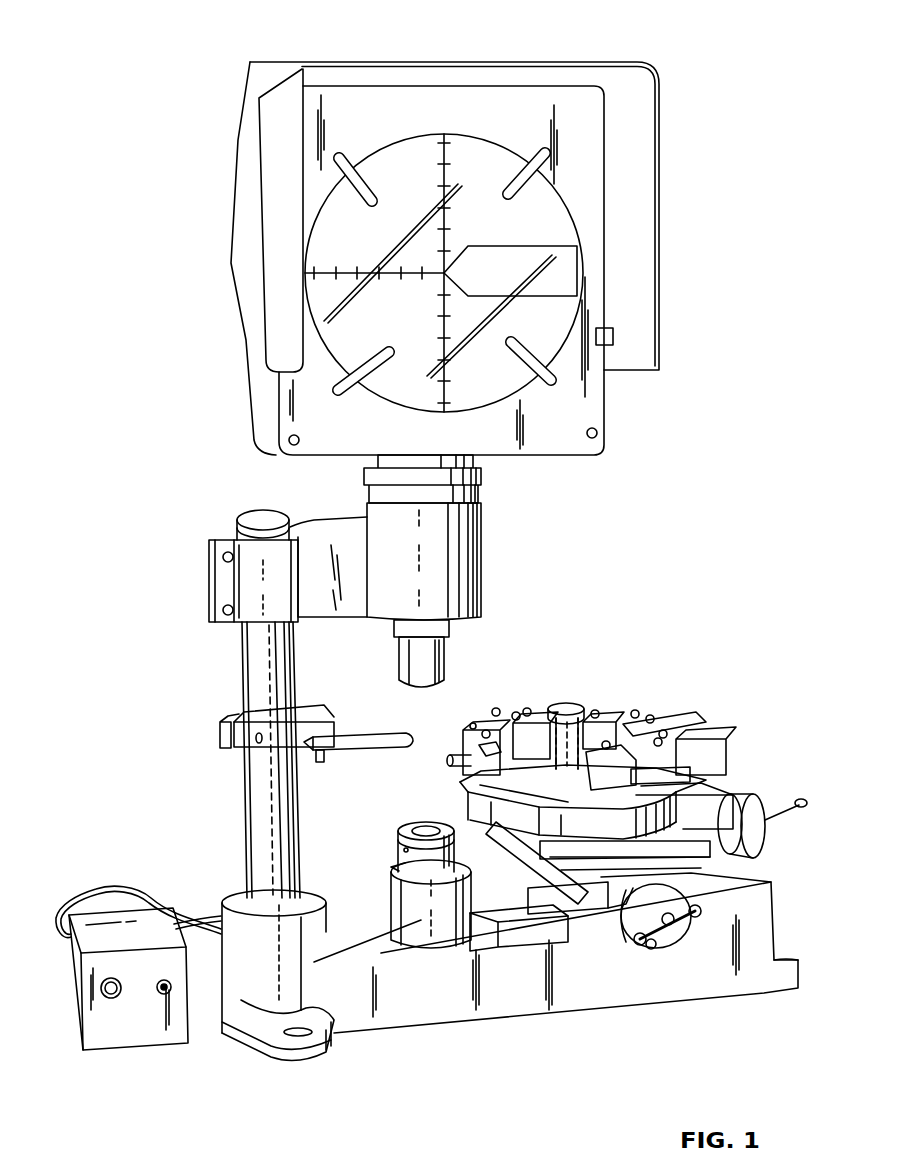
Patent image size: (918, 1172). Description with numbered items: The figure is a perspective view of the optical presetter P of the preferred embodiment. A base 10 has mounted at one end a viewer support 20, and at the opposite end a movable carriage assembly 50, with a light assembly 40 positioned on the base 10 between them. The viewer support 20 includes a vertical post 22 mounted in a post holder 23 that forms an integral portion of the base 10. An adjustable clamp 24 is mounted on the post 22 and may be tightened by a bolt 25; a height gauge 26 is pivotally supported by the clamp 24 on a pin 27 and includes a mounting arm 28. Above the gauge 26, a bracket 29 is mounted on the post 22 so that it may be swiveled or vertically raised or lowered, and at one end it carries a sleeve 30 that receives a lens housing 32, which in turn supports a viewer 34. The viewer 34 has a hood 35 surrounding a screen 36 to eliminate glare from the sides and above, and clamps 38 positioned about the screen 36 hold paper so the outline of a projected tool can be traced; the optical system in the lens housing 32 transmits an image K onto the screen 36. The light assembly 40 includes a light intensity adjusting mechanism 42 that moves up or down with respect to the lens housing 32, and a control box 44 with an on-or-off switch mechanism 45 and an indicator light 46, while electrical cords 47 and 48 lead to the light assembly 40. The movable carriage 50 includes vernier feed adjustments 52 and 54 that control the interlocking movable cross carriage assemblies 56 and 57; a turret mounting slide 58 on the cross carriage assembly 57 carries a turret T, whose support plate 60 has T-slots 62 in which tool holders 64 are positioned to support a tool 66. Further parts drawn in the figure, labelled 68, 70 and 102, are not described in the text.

The optical presetter P is at (108, 368).
The base 10 is at (610, 1003).
The viewer support 20 is at (238, 760).
The vertical post 22 is at (258, 835).
The post holder 23 is at (258, 1003).
The adjustable clamp 24 is at (218, 735).
The bolt 25 is at (258, 745).
The height gauge 26 is at (410, 733).
The pin 27 is at (323, 763).
The mounting arm 28 is at (317, 520).
The bracket 29 is at (225, 597).
The sleeve 30 is at (480, 567).
The lens housing 32 is at (447, 660).
The viewer 34 is at (560, 460).
The hood 35 is at (612, 65).
The screen 36 is at (491, 157).
The clamps 38 is at (385, 352).
The image K is at (515, 253).
The turret T is at (577, 805).
The light assembly 40 is at (404, 885).
The light intensity adjusting mechanism 42 is at (393, 862).
The control box 44 is at (99, 979).
The switch mechanism 45 is at (120, 993).
The indicator light 46 is at (163, 980).
The electrical cord 47 is at (195, 920).
The electrical cord 48 is at (117, 889).
The movable carriage assembly 50 is at (712, 791).
The vernier feed adjustment 52 is at (683, 925).
The vernier feed adjustment 54 is at (765, 838).
The cross carriage assembly 56 is at (603, 898).
The cross carriage assembly 57 is at (567, 855).
The turret mounting slide 58 is at (527, 822).
The support plate 60 is at (463, 779).
The T-slots 62 is at (572, 815).
The tool holders 64 is at (527, 722).
The tool 66 is at (445, 762).
The table 68 is at (455, 808).
The slide plate 70 is at (503, 858).
The post 102 is at (566, 704).